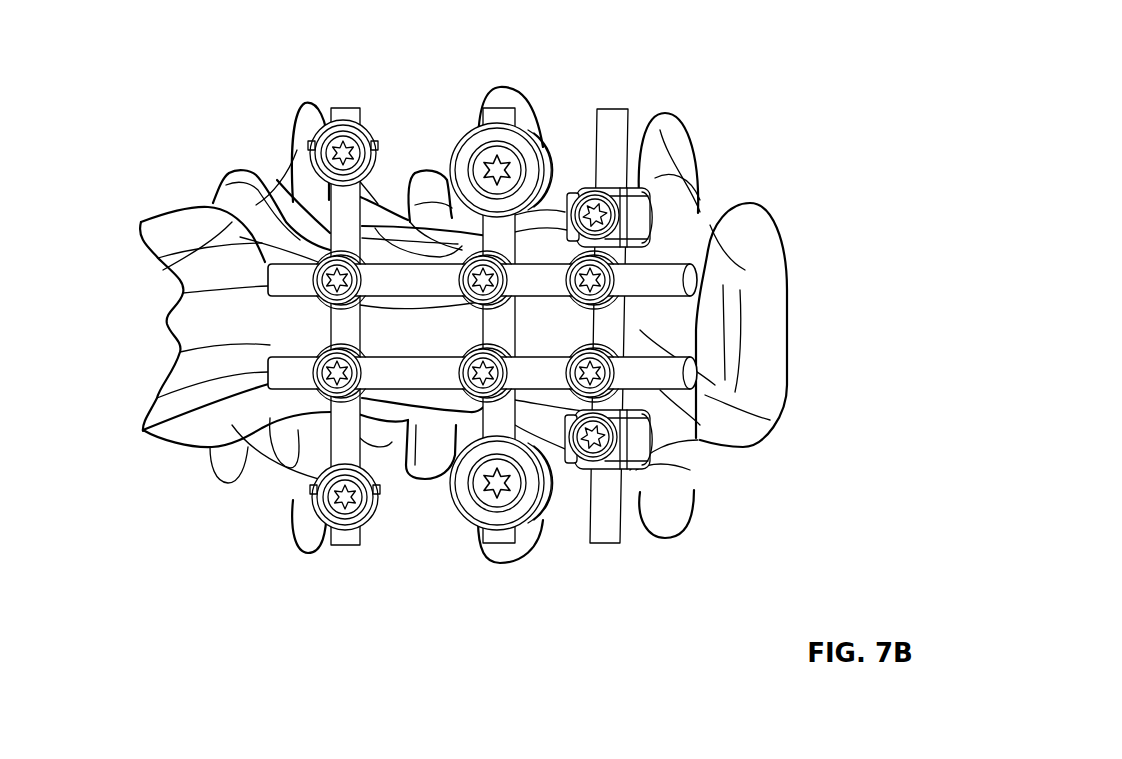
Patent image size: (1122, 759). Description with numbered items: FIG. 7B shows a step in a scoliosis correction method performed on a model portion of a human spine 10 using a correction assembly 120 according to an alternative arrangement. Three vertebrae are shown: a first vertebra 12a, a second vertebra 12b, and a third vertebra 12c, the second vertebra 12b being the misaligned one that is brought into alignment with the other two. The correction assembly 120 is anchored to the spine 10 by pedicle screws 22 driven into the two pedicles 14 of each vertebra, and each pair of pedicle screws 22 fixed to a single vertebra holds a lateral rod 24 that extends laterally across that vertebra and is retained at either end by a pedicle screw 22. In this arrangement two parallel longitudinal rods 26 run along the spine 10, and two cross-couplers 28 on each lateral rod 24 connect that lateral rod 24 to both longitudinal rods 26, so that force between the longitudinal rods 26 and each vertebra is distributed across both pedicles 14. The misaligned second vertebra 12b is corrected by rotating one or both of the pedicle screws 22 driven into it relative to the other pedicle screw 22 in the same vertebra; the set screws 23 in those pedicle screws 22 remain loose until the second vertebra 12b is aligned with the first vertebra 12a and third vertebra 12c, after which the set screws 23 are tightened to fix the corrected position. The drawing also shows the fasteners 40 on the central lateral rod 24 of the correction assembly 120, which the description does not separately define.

The spine 10 is at (452, 318).
The first vertebra 12a is at (168, 445).
The second vertebra 12b is at (422, 180).
The third vertebra 12c is at (768, 397).
The pedicle 14 is at (293, 140).
The pedicle screw 22 is at (330, 152).
The set screw 23 is at (343, 132).
The lateral rod 24 is at (303, 208).
The longitudinal rod 26 is at (268, 278).
The cross-coupler 28 is at (366, 248).
The fastener 40 is at (542, 152).
The correction assembly 120 is at (698, 222).